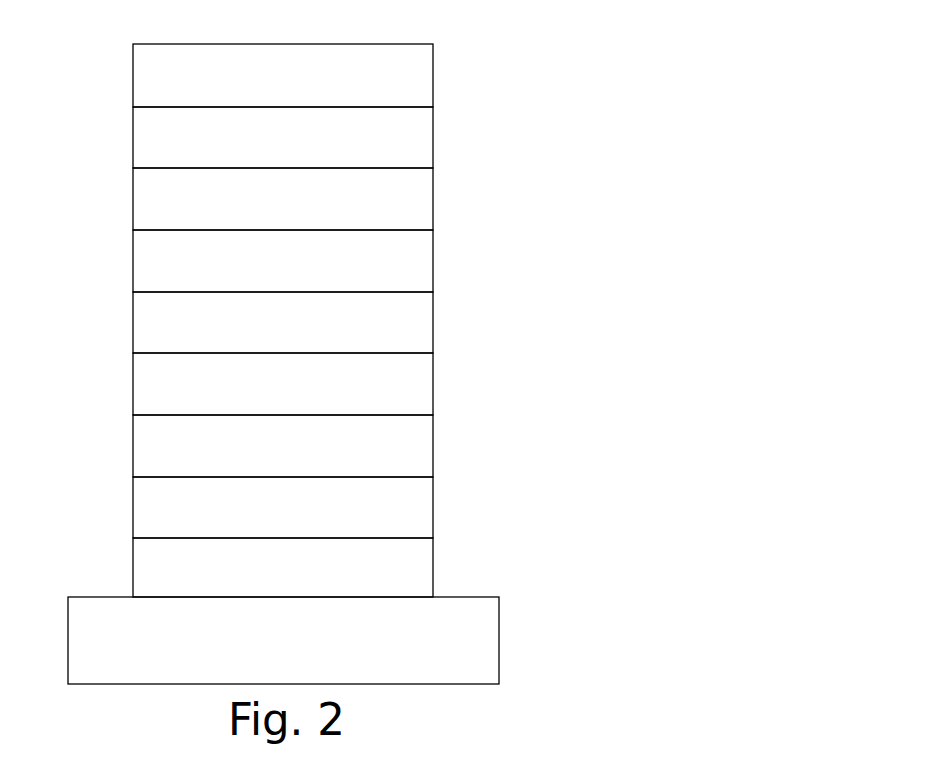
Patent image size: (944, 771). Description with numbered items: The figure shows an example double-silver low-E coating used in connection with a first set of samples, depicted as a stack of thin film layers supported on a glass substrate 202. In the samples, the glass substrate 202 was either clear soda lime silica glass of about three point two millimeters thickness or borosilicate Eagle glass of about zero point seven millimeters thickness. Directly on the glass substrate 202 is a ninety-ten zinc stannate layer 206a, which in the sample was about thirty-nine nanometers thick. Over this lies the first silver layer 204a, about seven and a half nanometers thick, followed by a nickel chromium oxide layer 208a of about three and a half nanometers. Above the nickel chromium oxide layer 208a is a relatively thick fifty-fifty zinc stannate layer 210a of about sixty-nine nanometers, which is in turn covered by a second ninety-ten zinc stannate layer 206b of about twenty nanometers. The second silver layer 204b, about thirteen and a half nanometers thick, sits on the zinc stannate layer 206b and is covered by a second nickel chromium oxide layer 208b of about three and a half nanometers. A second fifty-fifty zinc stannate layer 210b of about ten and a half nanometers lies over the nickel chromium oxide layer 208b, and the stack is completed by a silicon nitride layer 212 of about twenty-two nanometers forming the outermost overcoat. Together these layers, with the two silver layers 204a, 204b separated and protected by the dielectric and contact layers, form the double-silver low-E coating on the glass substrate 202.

The glass substrate 202 is at (485, 638).
The Ag layer 204a is at (433, 510).
The Ag layer 204b is at (433, 261).
The ZnSnOx (90/10) layer 206a is at (433, 577).
The ZnSnOx (90/10) layer 206b is at (433, 326).
The NiCrOx layer 208a is at (433, 449).
The NiCrOx layer 208b is at (433, 201).
The ZnSnOx (50/50) layer 210a is at (433, 387).
The ZnSnOx (50/50) layer 210b is at (433, 140).
The Si3N4 layer 212 is at (433, 80).